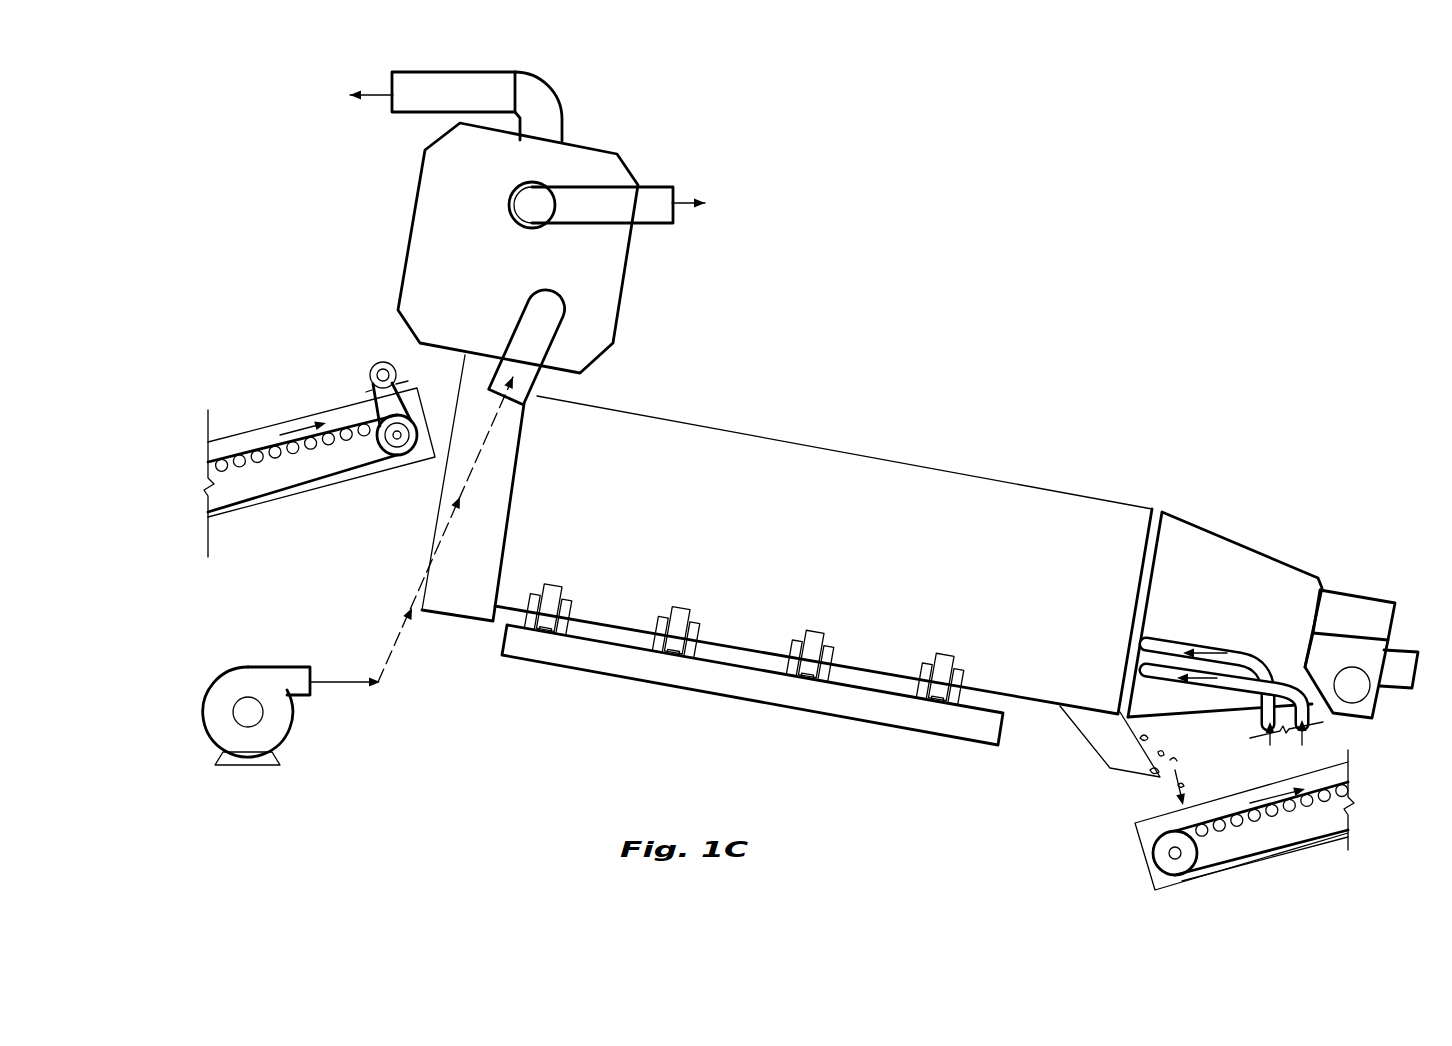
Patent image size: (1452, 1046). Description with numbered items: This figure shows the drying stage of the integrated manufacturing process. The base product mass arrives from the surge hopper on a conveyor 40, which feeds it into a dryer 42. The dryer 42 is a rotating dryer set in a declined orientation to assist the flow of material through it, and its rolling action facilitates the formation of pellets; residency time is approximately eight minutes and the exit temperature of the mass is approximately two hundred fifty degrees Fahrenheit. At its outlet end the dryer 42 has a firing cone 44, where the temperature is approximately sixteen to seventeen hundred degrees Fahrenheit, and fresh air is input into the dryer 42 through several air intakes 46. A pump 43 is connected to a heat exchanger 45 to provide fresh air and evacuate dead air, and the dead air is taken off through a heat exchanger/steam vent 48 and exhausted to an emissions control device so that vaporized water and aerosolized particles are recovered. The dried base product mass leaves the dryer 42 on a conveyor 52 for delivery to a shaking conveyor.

The conveyor 40 is at (352, 403).
The dryer 42 is at (878, 468).
The pump 43 is at (243, 683).
The firing cone 44 is at (1233, 545).
The heat exchanger 45 is at (438, 205).
The air intakes 46 is at (1313, 715).
The heat exchanger/steam vent 48 is at (463, 73).
The conveyor 52 is at (1157, 815).